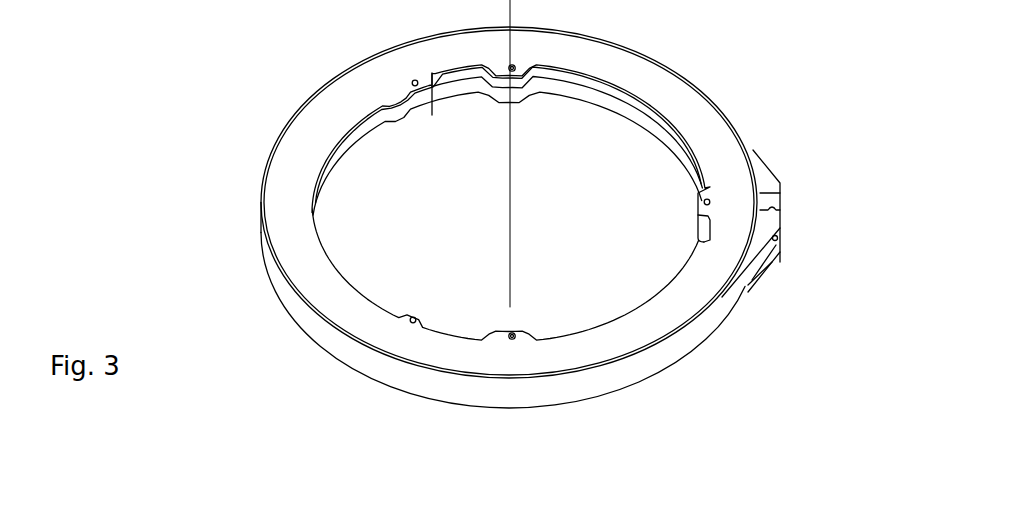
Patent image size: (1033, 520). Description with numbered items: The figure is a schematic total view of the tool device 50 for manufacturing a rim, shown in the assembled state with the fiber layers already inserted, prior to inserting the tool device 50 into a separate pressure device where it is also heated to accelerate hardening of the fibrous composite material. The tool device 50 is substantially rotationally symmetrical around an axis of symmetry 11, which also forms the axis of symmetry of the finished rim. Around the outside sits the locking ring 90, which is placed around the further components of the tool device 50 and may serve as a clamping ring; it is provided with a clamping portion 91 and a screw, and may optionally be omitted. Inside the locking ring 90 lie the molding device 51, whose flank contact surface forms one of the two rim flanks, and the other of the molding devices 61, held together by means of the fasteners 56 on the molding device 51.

The tool device 50 is at (158, 72).
The locking ring 90 is at (345, 342).
The molding device 61 is at (312, 137).
The molding device 51 is at (368, 125).
The fasteners 56 is at (420, 318).
The axis of symmetry 11 is at (512, 262).
The clamping portion 91 is at (797, 218).